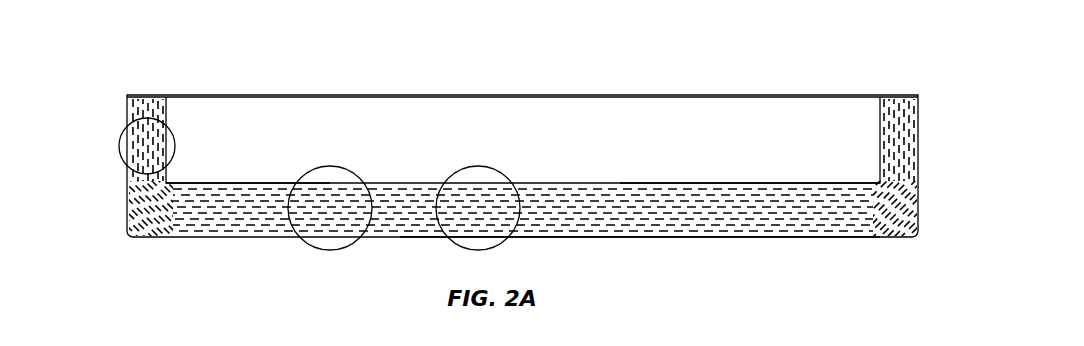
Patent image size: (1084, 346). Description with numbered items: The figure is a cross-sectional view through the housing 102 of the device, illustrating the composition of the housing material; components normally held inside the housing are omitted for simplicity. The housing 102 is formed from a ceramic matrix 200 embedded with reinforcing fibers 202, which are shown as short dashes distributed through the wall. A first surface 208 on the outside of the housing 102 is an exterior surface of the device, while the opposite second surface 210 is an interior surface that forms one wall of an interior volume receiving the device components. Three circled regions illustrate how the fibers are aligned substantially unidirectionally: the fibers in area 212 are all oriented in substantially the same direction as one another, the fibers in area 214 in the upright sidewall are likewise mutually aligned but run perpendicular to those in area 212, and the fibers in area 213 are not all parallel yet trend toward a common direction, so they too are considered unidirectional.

The housing 102 is at (128, 214).
The ceramic matrix 200 is at (157, 99).
The reinforcing fibers 202 is at (222, 183).
The first surface 208 is at (715, 238).
The second surface 210 is at (703, 180).
The area 212 is at (362, 180).
The area 213 is at (507, 177).
The area 214 is at (118, 150).